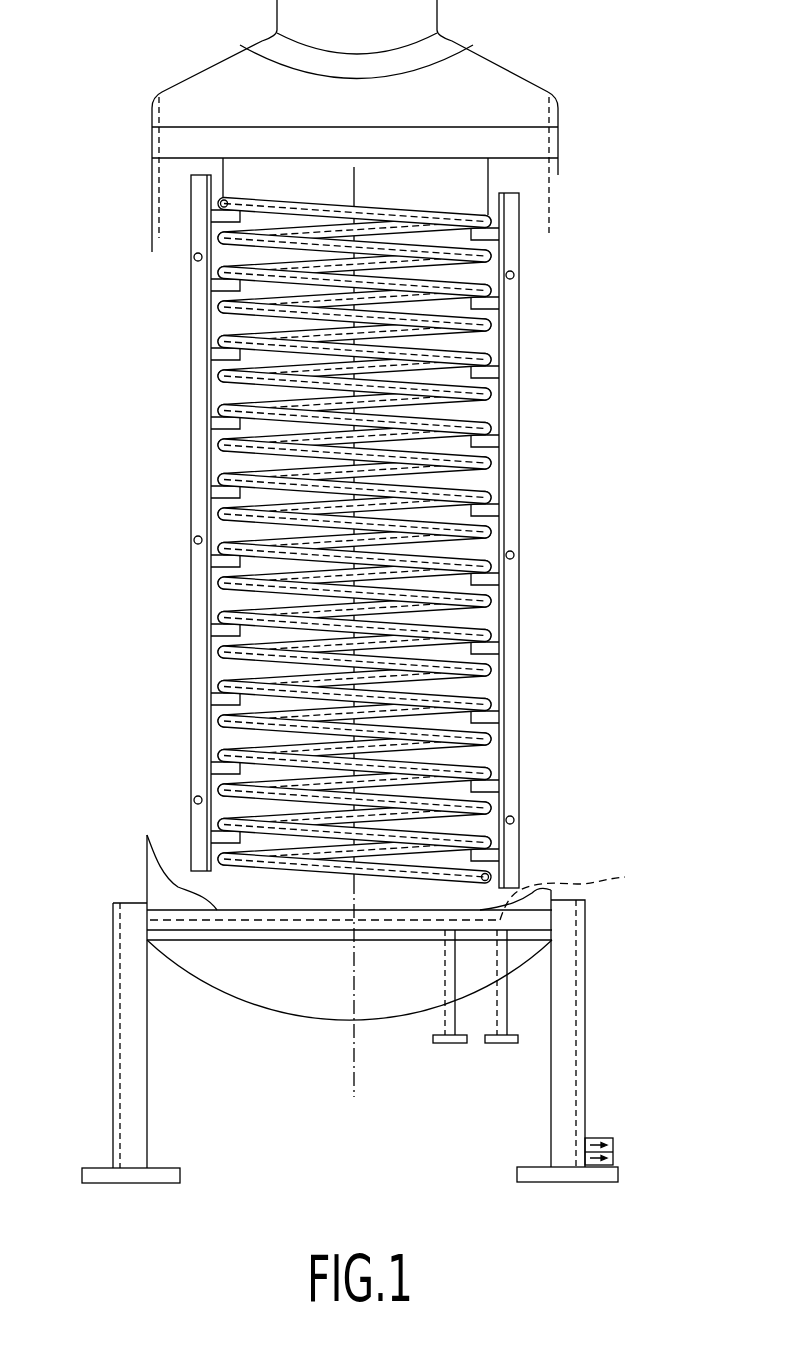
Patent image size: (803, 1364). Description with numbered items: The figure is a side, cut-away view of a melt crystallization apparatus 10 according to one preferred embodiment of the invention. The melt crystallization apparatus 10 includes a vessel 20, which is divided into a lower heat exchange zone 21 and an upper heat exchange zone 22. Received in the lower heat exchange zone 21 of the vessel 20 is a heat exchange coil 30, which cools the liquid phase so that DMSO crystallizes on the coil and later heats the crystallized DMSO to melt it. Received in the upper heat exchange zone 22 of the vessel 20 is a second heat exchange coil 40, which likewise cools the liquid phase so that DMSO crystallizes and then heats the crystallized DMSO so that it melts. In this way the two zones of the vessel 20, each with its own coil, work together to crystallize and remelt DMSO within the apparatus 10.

The melt crystallization apparatus 10 is at (350, 591).
The vessel 20 is at (167, 87).
The lower heat exchange zone 21 is at (140, 935).
The upper heat exchange zone 22 is at (191, 733).
The heat exchange coil 30 is at (581, 887).
The heat exchange coil 40 is at (457, 338).